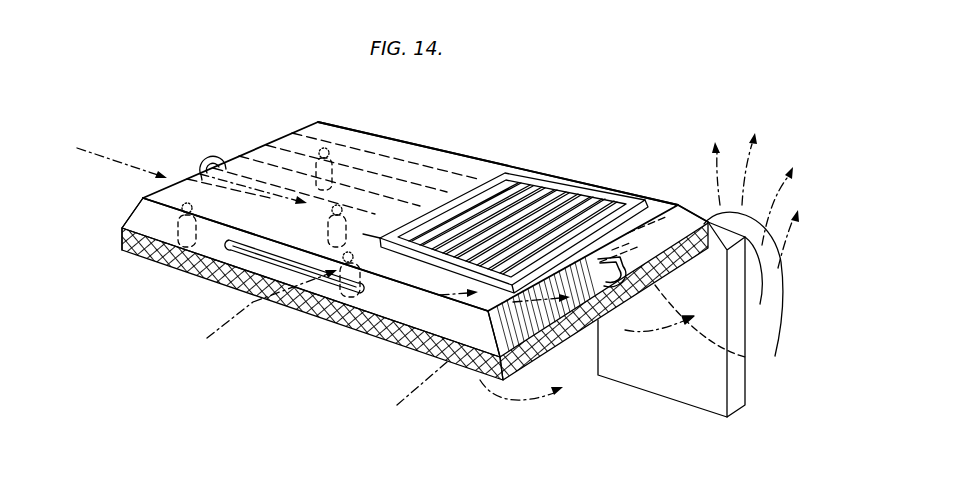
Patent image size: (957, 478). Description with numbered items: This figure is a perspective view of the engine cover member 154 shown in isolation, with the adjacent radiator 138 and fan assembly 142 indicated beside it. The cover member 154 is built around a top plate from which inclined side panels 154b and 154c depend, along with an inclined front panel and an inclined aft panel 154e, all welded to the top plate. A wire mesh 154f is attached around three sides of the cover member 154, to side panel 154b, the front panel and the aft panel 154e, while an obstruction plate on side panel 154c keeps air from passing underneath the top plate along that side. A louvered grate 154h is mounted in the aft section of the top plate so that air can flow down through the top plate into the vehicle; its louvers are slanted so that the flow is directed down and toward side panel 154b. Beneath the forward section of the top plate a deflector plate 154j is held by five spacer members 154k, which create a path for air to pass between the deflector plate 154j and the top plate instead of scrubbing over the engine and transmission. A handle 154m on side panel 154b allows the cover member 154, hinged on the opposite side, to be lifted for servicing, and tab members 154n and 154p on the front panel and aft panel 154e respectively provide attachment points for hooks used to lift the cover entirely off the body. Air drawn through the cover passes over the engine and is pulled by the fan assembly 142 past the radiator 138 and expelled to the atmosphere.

The cover member 154 is at (291, 340).
The inclined side panel 154b is at (433, 318).
The inclined side panel 154c is at (475, 160).
The inclined aft panel 154e is at (647, 228).
The wire mesh 154f is at (140, 259).
The louvered grate 154h is at (558, 180).
The deflector plate 154j is at (372, 187).
The spacer members 154k is at (338, 240).
The handle 154m is at (247, 251).
The tab member 154n is at (217, 156).
The tab member 154p is at (627, 306).
The radiator 138 is at (680, 383).
The fan assembly 142 is at (753, 295).